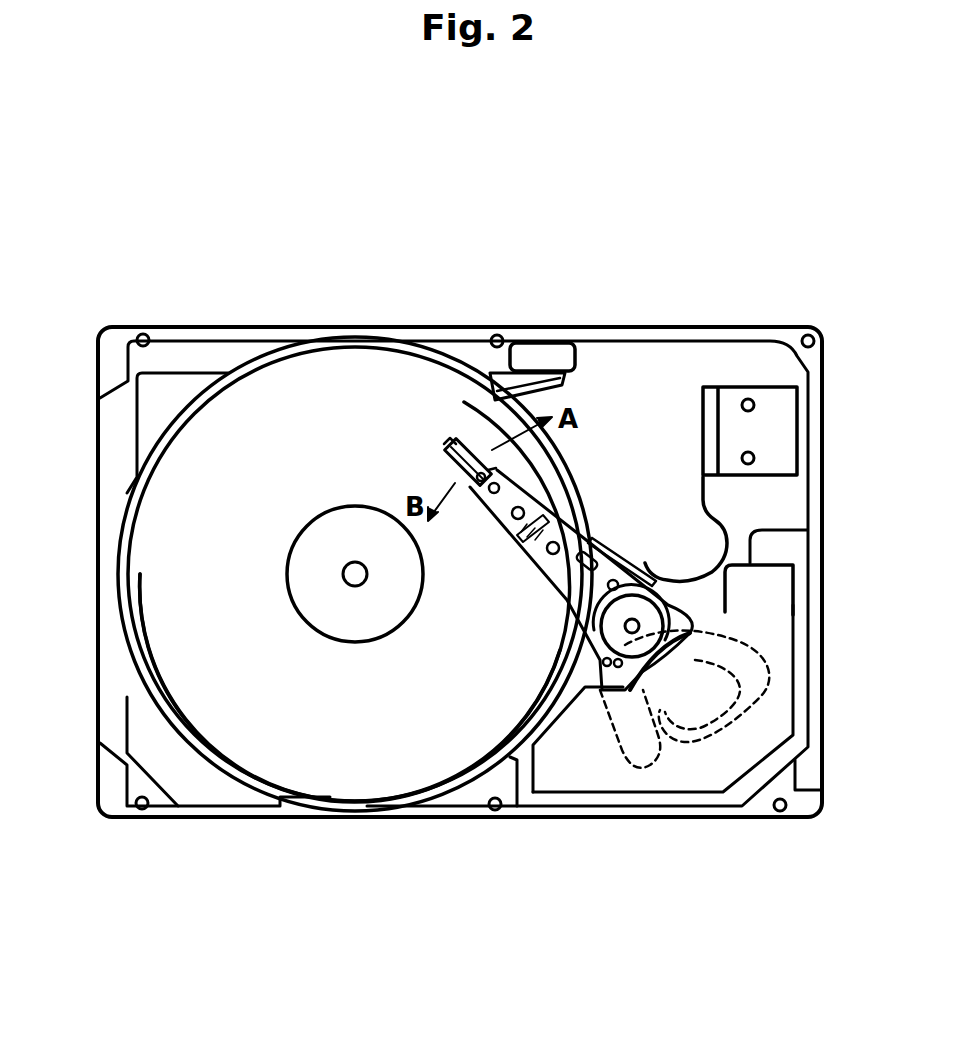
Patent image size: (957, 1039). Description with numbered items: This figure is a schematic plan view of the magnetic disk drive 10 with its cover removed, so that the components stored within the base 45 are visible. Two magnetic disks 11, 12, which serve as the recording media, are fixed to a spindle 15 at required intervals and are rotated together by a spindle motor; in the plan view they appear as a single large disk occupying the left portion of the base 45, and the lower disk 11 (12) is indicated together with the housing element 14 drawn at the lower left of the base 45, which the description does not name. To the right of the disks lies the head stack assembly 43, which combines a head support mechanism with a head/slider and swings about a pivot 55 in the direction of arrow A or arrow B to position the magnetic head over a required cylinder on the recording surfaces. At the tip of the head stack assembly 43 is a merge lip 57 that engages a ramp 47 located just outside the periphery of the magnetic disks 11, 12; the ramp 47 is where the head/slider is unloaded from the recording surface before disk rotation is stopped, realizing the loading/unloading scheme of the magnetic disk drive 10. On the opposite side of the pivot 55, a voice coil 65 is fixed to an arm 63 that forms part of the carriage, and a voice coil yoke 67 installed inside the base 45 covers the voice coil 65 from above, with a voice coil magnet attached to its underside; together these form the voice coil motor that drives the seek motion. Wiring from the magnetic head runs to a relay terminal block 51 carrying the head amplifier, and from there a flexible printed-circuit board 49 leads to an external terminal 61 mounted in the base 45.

The magnetic disk drive 10 is at (368, 318).
The magnetic disk 11 is at (355, 607).
The magnetic disk 12 is at (365, 720).
The housing base 14 is at (213, 745).
The spindle 15 is at (343, 572).
The head stack assembly 43 is at (515, 583).
The base 45 is at (670, 370).
The ramp 47 is at (541, 372).
The flexible printed-circuit board 49 is at (725, 520).
The relay terminal block 51 is at (640, 578).
The pivot 55 is at (637, 623).
The merge lip 57 is at (452, 440).
The external terminal 61 is at (775, 435).
The arm 63 is at (620, 760).
The voice coil 65 is at (700, 737).
The voice coil yoke 67 is at (797, 567).